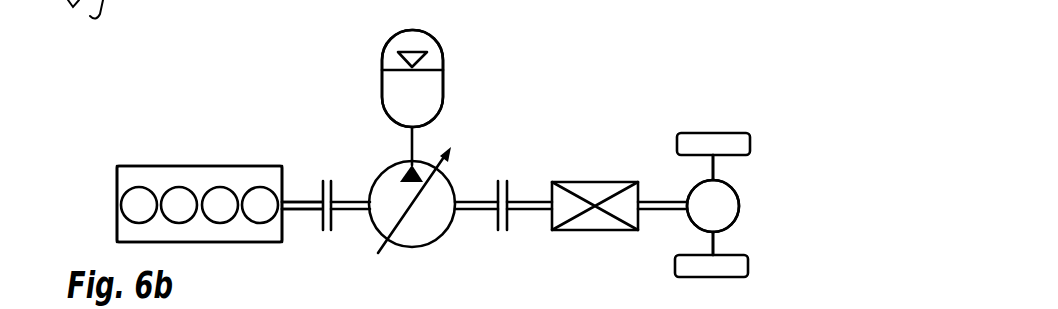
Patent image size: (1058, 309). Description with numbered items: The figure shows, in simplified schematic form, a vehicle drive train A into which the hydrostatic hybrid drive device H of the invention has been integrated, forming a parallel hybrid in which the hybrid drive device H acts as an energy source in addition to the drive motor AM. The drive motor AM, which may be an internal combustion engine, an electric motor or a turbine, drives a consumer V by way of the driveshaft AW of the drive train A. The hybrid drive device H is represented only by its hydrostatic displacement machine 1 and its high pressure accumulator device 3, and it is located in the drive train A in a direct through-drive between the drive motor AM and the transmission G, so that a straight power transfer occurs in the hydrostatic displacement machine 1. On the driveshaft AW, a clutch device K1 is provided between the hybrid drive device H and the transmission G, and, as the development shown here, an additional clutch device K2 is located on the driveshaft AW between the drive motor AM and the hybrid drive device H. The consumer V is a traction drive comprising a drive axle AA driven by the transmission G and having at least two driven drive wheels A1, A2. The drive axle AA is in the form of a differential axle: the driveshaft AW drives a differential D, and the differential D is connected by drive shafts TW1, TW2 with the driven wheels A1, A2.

The drive train A is at (106, 125).
The drive motor AM is at (147, 173).
The driveshaft AW is at (293, 210).
The additional clutch device K2 is at (314, 160).
The hydrostatic displacement machine 1 is at (390, 181).
The high pressure accumulator device 3 is at (382, 76).
The hydrostatic hybrid drive device H is at (461, 51).
The clutch device K1 is at (503, 160).
The transmission G is at (583, 187).
The consumer V is at (707, 78).
The drive shaft TW1 is at (710, 170).
The driven drive wheel A1 is at (727, 143).
The drive axle AA is at (738, 194).
The differential D is at (720, 203).
The drive shaft TW2 is at (710, 243).
The driven drive wheel A2 is at (733, 267).